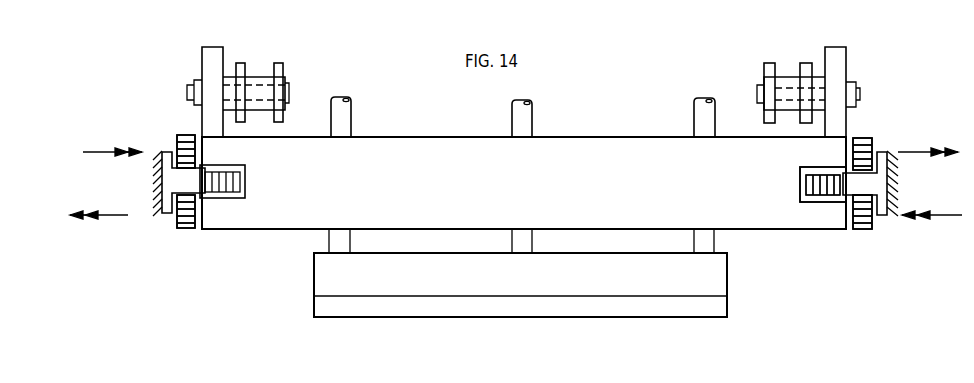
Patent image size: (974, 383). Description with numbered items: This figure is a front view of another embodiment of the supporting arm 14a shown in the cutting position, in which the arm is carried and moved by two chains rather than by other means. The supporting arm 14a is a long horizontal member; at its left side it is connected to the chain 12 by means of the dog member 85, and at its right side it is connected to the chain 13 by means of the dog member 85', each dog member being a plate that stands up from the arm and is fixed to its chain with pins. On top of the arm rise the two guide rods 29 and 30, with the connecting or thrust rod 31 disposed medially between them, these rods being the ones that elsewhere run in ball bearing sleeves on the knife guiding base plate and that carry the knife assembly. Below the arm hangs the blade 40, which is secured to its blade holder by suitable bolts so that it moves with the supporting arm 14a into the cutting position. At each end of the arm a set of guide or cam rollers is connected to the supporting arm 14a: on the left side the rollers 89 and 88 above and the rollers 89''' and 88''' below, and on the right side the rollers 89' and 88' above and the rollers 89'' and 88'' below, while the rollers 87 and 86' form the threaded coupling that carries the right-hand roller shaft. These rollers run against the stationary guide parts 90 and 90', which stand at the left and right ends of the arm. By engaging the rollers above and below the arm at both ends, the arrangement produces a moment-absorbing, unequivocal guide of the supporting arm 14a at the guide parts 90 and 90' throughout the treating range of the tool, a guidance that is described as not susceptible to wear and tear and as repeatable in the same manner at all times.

The supporting arm 14a is at (750, 220).
The guide rod 29 is at (348, 115).
The connecting or thrust rod 31 is at (530, 117).
The guide rod 30 is at (700, 117).
The blade 40 is at (713, 285).
The dog member 85 is at (185, 89).
The dog member 85' is at (867, 80).
The chain 12 is at (252, 80).
The chain 13 is at (800, 65).
The guide or cam roller 89 is at (146, 133).
The guide or cam roller 88 is at (146, 133).
The guide or cam roller 89' is at (901, 138).
The guide or cam roller 88' is at (901, 138).
The guide or cam roller 89'' is at (904, 231).
The guide or cam roller 88'' is at (904, 231).
The guide or cam roller 89''' is at (157, 231).
The guide or cam roller 88''' is at (157, 231).
The guide part 90 is at (157, 183).
The guide part 90' is at (902, 183).
The guide or cam roller 87 is at (820, 195).
The guide or cam roller 86' is at (837, 222).